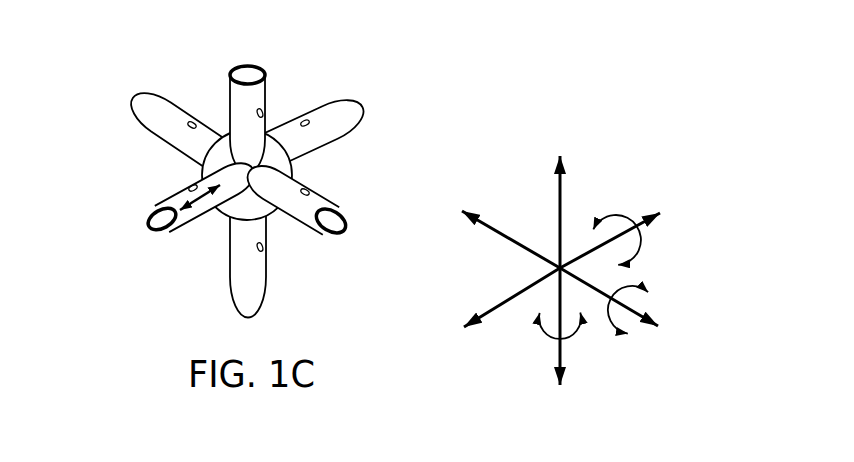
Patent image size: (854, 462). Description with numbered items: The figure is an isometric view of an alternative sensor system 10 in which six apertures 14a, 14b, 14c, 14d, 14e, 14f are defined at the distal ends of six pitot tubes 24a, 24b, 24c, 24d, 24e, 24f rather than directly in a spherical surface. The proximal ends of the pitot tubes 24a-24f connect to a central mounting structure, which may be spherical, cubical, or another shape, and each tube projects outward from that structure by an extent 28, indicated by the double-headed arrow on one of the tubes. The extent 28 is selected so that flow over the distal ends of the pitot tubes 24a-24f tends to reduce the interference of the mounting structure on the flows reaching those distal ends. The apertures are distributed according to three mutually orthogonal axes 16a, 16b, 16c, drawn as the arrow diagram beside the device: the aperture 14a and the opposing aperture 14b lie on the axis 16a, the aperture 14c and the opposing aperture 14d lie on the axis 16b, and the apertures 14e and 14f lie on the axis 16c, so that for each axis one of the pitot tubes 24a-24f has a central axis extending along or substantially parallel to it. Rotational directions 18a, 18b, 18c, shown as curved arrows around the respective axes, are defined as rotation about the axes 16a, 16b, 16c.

The sensor system 10 is at (314, 59).
The aperture 14a is at (157, 223).
The opposing aperture 14b is at (334, 107).
The aperture 14c is at (253, 70).
The opposing aperture 14d is at (255, 284).
The aperture 14e is at (345, 224).
The aperture 14f is at (148, 125).
The pitot tube 24a is at (173, 200).
The pitot tube 24b is at (318, 141).
The pitot tube 24c is at (233, 91).
The pitot tube 24d is at (238, 255).
The pitot tube 24e is at (312, 192).
The pitot tube 24f is at (188, 118).
The extent 28 is at (191, 233).
The axis 16a is at (505, 298).
The axis 16b is at (563, 192).
The axis 16c is at (497, 230).
The rotational direction 18a is at (620, 206).
The rotational direction 18b is at (535, 332).
The rotational direction 18c is at (641, 287).